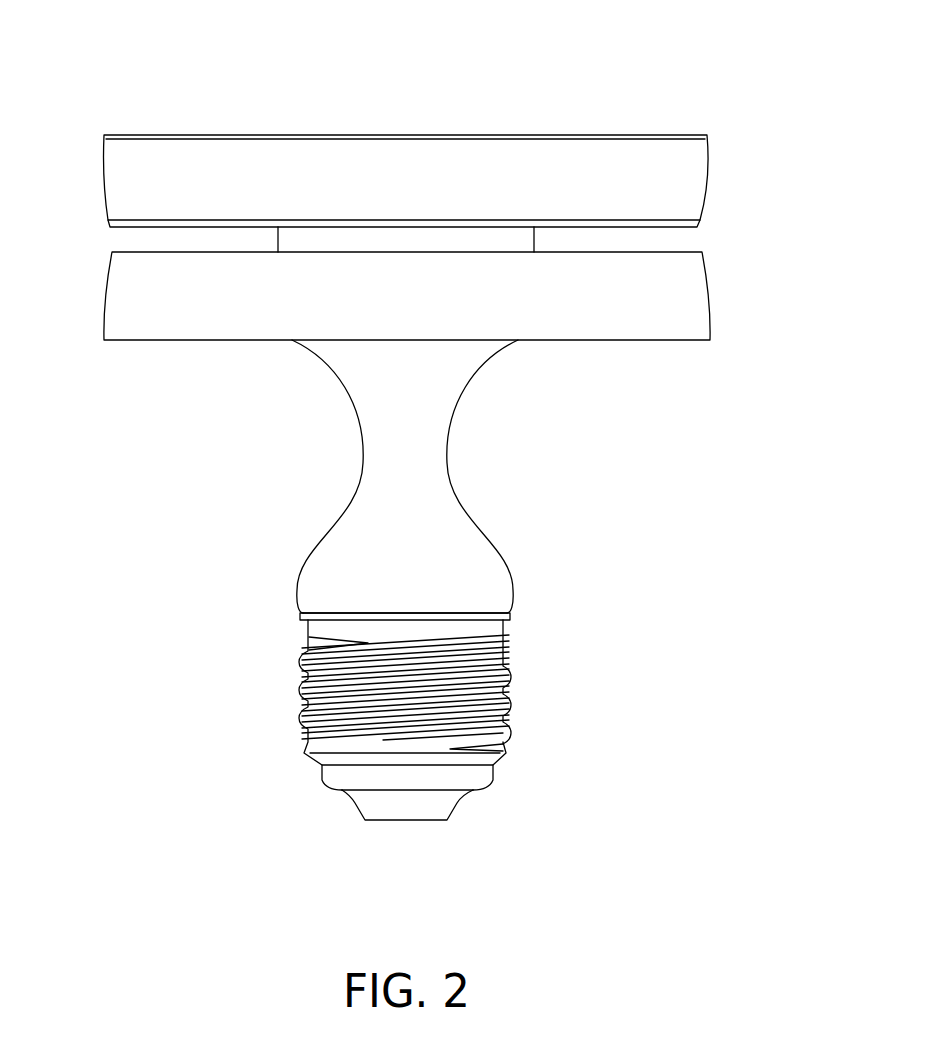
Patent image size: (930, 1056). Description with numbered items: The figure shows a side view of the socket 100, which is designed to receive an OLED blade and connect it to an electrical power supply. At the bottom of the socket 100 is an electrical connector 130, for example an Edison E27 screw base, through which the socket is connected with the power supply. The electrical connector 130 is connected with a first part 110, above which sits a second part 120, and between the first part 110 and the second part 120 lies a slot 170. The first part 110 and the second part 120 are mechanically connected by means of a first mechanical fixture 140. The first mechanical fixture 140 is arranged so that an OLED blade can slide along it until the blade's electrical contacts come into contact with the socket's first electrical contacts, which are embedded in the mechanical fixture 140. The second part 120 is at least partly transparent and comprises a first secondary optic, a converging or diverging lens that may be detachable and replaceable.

The socket 100 is at (124, 83).
The first part 110 is at (595, 340).
The second part 120 is at (595, 133).
The electrical connector 130 is at (405, 820).
The first mechanical fixture 140 is at (335, 238).
The slot 170 is at (685, 237).